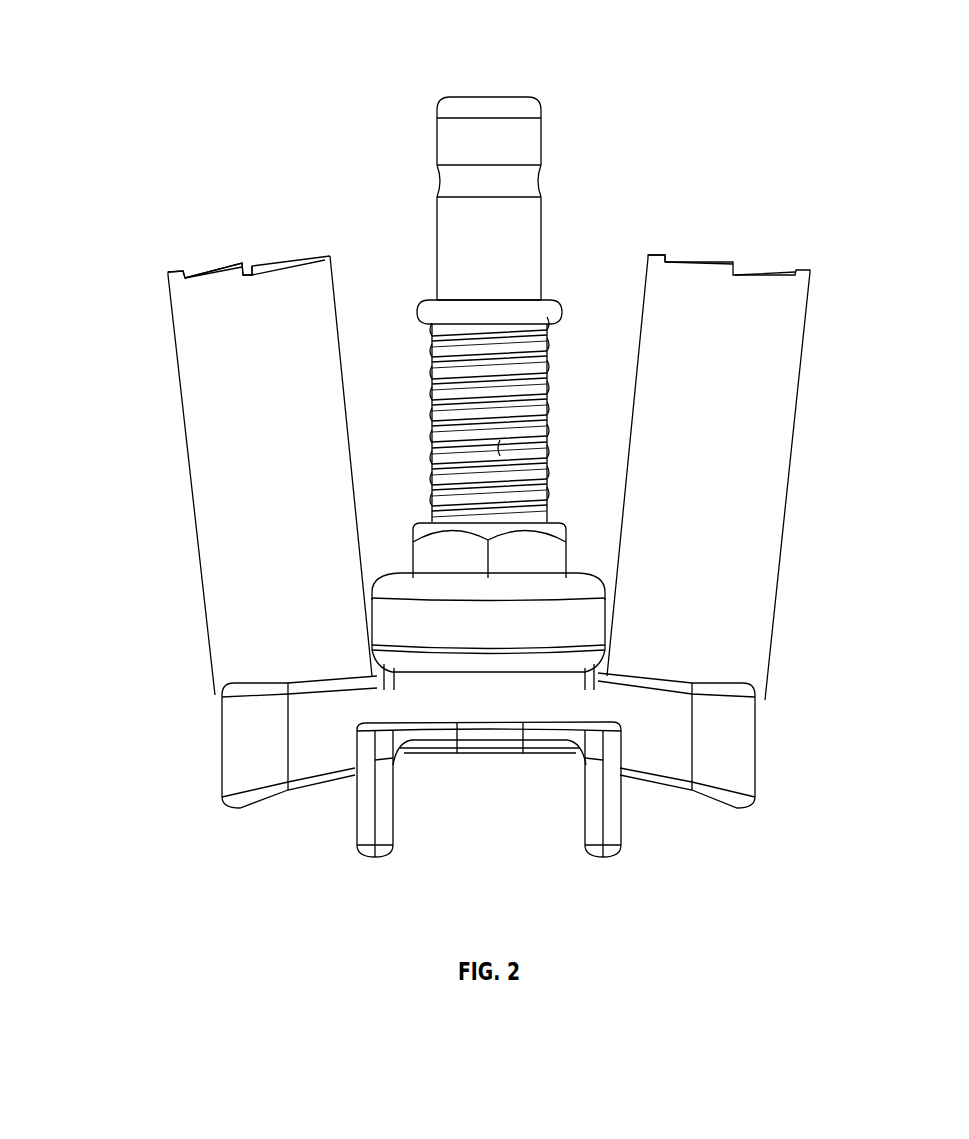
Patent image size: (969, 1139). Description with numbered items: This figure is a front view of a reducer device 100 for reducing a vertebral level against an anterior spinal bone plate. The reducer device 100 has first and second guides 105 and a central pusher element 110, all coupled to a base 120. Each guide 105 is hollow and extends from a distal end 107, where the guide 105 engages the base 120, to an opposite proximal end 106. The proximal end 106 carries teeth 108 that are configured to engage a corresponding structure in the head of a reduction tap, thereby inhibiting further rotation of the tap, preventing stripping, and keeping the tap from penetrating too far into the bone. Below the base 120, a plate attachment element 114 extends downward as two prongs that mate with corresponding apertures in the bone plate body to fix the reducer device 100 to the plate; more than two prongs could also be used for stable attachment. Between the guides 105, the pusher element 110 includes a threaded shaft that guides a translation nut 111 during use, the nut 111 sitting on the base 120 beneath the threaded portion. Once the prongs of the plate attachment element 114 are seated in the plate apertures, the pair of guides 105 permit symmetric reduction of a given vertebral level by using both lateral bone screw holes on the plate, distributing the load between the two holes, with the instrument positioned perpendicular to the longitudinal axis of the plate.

The reducer device 100 is at (221, 96).
The guides 105 is at (220, 487).
The proximal end 106 is at (172, 277).
The distal end 107 is at (222, 745).
The teeth 108 is at (220, 265).
The pusher element 110 is at (535, 130).
The translation nut 111 is at (404, 545).
The plate attachment element 114 is at (610, 827).
The base 120 is at (722, 745).